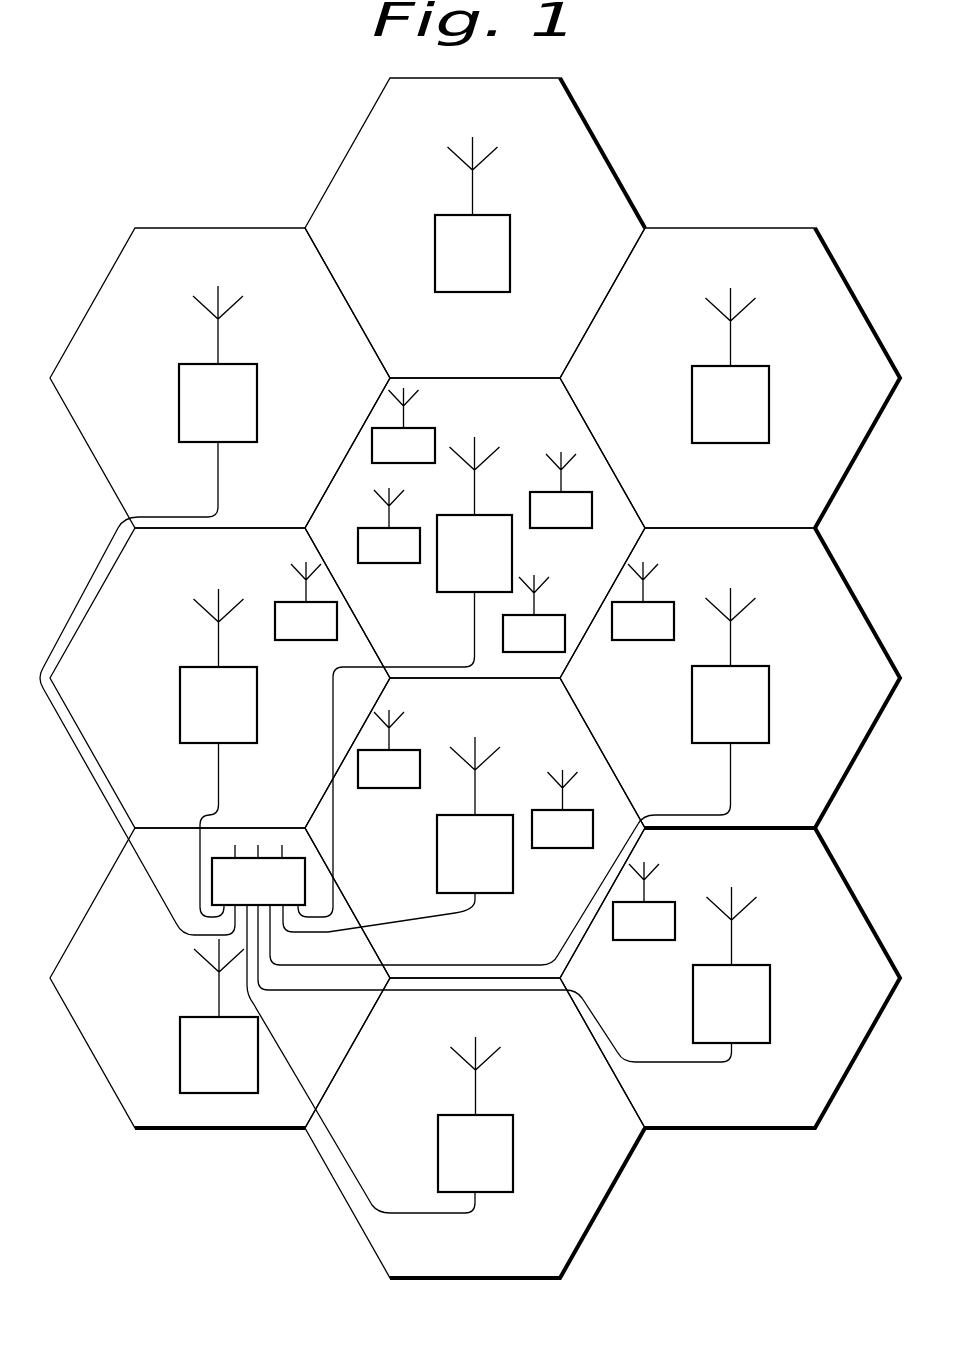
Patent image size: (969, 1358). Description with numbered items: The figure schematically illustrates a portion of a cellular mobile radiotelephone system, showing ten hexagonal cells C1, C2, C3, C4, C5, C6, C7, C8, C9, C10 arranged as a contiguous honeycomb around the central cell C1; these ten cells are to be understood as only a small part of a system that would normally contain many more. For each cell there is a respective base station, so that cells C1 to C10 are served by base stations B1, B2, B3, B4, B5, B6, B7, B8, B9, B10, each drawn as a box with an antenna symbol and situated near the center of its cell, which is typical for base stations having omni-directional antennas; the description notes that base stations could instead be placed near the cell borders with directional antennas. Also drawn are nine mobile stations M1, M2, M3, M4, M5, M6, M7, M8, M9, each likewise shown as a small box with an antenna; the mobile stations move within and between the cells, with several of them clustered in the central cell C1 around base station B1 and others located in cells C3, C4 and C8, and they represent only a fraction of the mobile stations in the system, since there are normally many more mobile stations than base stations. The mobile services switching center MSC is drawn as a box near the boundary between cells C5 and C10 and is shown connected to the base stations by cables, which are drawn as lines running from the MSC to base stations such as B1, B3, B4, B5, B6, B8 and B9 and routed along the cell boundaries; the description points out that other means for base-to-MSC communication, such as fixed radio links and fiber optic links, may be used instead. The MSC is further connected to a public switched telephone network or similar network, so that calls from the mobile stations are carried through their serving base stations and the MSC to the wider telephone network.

The cell C1 is at (412, 657).
The cell C2 is at (667, 507).
The cell C3 is at (667, 807).
The cell C4 is at (413, 957).
The cell C5 is at (157, 807).
The cell C6 is at (157, 509).
The cell C7 is at (413, 357).
The cell C8 is at (667, 1109).
The cell C9 is at (414, 1259).
The cell C10 is at (164, 1107).
The base station B1 is at (405, 677).
The base station B2 is at (730, 365).
The base station B3 is at (519, 776).
The base station B4 is at (398, 834).
The base station B5 is at (218, 753).
The base station B6 is at (148, 610).
The base station B7 is at (472, 214).
The base station B8 is at (514, 974).
The base station B9 is at (380, 1059).
The base station B10 is at (219, 1016).
The mobile station M1 is at (644, 901).
The mobile station M2 is at (306, 601).
The mobile station M3 is at (389, 525).
The mobile station M4 is at (561, 490).
The mobile station M5 is at (643, 601).
The mobile station M6 is at (403, 425).
The mobile station M7 is at (534, 613).
The mobile station M8 is at (562, 809).
The mobile station M9 is at (389, 749).
The mobile services switching center MSC is at (258, 875).